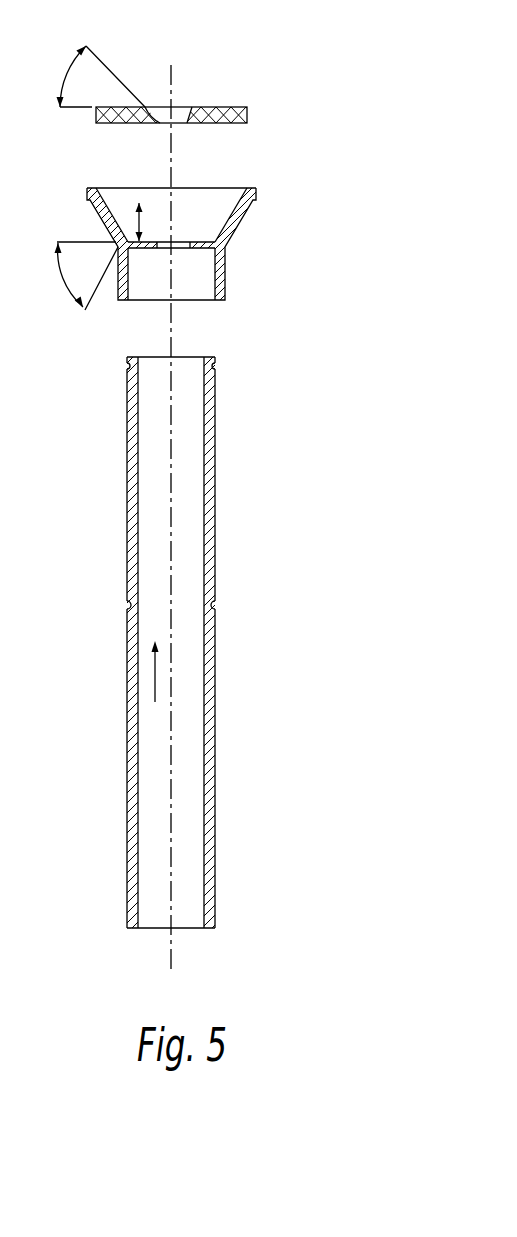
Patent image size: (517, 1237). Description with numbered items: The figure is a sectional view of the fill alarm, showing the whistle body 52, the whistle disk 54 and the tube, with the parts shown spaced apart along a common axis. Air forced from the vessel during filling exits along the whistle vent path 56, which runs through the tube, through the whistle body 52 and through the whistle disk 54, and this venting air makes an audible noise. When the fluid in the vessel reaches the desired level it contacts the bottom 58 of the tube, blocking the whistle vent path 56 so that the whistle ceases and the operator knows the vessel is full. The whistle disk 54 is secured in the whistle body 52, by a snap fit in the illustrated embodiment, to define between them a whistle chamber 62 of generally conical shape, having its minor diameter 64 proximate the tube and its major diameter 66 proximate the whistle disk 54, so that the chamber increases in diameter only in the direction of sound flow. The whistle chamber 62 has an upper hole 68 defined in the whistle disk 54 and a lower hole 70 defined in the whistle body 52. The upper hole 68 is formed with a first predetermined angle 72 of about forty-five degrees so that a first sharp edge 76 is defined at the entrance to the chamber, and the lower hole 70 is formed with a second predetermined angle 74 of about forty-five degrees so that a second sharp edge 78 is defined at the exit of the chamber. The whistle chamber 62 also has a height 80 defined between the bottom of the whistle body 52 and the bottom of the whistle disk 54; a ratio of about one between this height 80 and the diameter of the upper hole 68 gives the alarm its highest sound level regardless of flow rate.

The whistle body 52 is at (225, 287).
The whistle disk 54 is at (223, 107).
The whistle vent path 56 is at (154, 678).
The bottom 58 is at (188, 930).
The whistle chamber 62 is at (210, 221).
The minor diameter 64 is at (240, 233).
The major diameter 66 is at (250, 203).
The upper hole 68 is at (204, 78).
The lower hole 70 is at (156, 264).
The first predetermined angle 72 is at (64, 279).
The second predetermined angle 74 is at (66, 76).
The first sharp edge 76 is at (188, 240).
The second sharp edge 78 is at (160, 124).
The height 80 is at (136, 222).